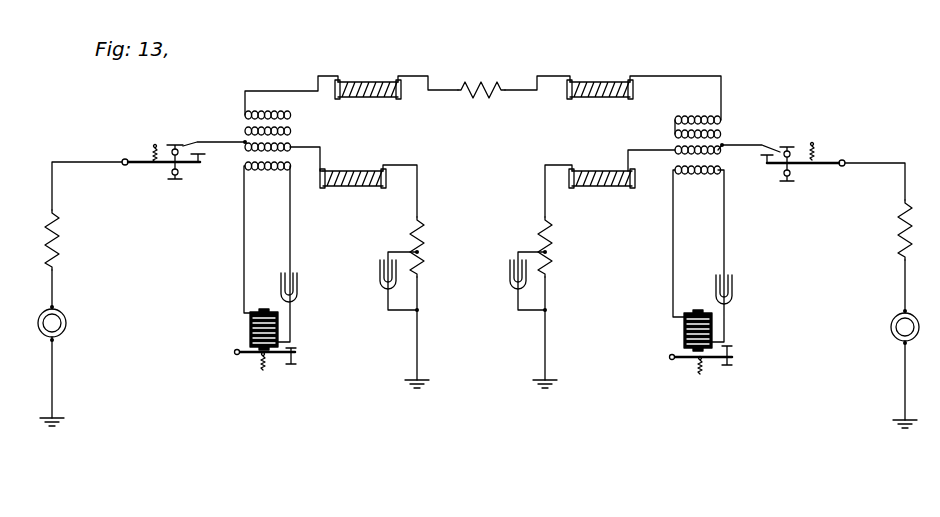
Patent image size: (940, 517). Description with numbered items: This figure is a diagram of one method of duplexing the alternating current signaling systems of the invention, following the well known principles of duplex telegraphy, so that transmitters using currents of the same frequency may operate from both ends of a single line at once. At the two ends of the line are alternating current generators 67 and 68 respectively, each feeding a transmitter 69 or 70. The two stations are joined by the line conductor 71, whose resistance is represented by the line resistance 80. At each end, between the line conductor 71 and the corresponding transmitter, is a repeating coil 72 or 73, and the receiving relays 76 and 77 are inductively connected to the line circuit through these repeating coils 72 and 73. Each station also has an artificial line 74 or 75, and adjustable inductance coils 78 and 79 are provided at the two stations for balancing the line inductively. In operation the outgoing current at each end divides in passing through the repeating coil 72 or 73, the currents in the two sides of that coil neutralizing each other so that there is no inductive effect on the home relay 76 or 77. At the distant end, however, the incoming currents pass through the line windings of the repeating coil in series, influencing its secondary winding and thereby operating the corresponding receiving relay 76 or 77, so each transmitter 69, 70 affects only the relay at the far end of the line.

The alternating current generator 67 is at (58, 325).
The alternating current generator 68 is at (897, 331).
The transmitter 69 is at (163, 167).
The transmitter 70 is at (818, 167).
The line conductor 71 is at (556, 76).
The repeating coil 72 is at (284, 140).
The repeating coil 73 is at (680, 145).
The artificial line 74 is at (418, 264).
The artificial line 75 is at (530, 264).
The receiving relay 76 is at (266, 325).
The receiving relay 77 is at (701, 328).
The adjustable inductance coil 78 is at (360, 134).
The adjustable inductance coil 79 is at (601, 134).
The line resistance 80 is at (481, 77).